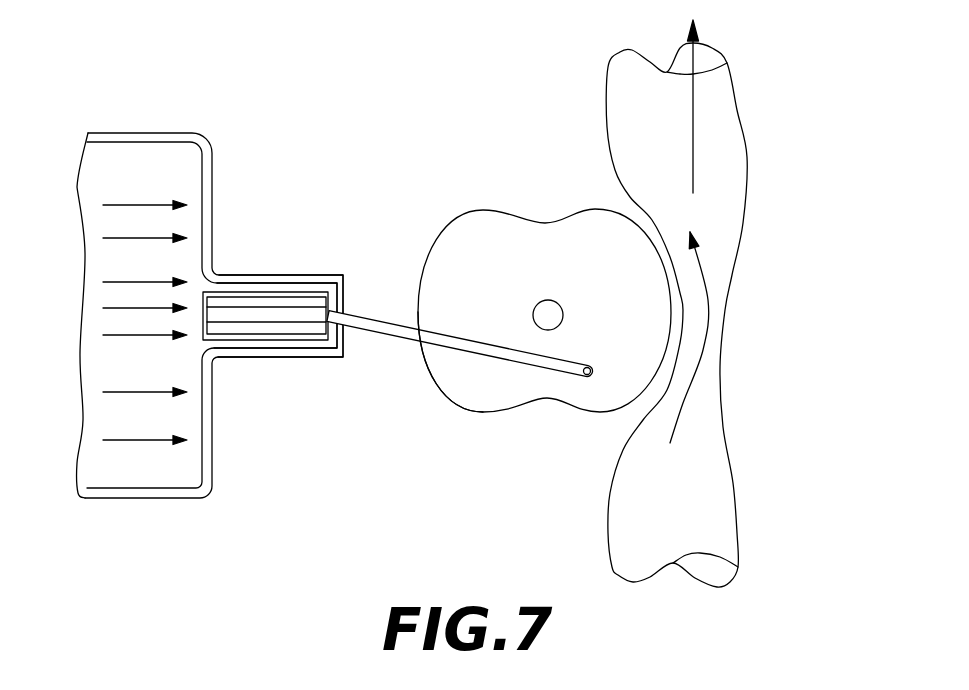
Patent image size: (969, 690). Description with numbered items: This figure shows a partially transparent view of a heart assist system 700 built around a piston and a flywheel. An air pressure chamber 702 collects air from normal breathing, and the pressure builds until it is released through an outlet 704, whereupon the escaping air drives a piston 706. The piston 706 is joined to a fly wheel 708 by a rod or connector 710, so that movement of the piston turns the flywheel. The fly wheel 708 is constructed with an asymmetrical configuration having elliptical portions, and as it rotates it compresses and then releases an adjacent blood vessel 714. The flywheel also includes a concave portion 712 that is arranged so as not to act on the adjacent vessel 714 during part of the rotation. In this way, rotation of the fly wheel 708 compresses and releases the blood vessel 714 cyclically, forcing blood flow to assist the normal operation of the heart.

The heart assist system 700 is at (478, 119).
The air pressure chamber 702 is at (182, 132).
The outlet 704 is at (263, 357).
The piston 706 is at (227, 293).
The fly wheel 708 is at (488, 210).
The rod or connector 710 is at (410, 339).
The concave portion 712 is at (547, 400).
The blood vessel 714 is at (740, 115).